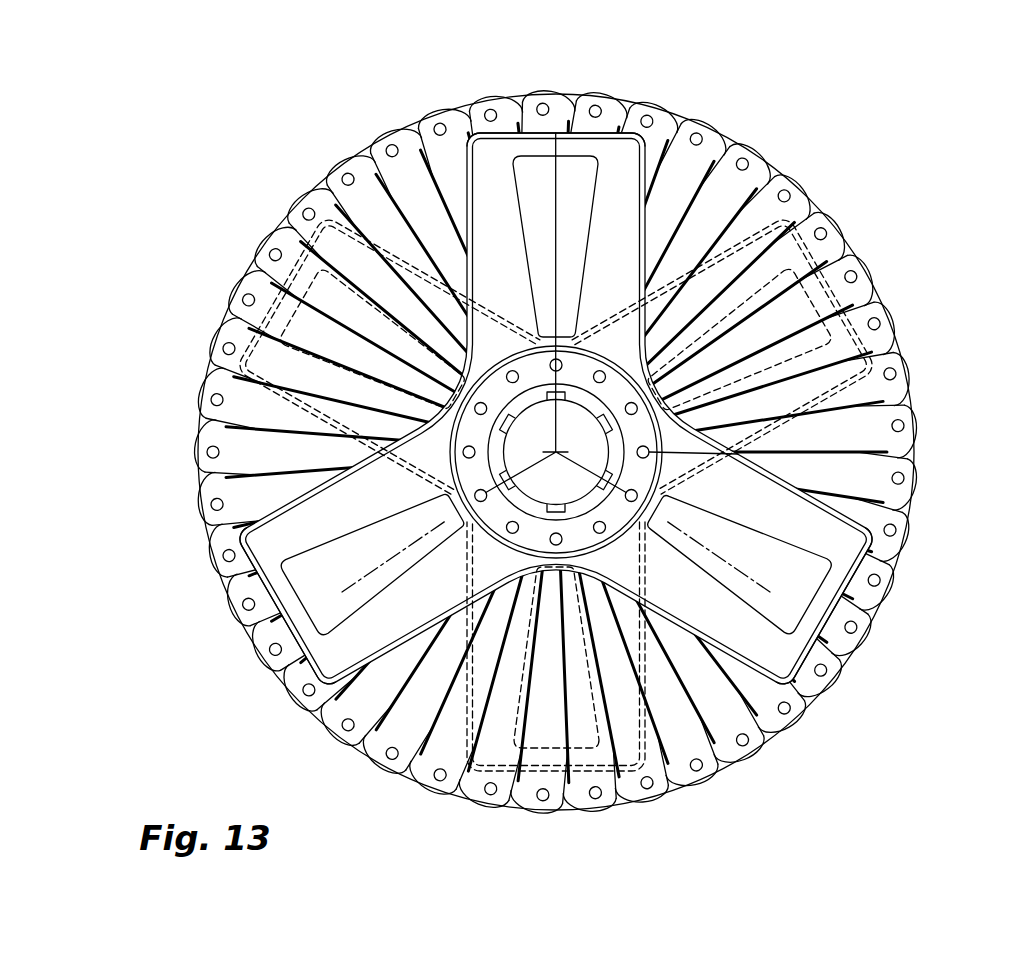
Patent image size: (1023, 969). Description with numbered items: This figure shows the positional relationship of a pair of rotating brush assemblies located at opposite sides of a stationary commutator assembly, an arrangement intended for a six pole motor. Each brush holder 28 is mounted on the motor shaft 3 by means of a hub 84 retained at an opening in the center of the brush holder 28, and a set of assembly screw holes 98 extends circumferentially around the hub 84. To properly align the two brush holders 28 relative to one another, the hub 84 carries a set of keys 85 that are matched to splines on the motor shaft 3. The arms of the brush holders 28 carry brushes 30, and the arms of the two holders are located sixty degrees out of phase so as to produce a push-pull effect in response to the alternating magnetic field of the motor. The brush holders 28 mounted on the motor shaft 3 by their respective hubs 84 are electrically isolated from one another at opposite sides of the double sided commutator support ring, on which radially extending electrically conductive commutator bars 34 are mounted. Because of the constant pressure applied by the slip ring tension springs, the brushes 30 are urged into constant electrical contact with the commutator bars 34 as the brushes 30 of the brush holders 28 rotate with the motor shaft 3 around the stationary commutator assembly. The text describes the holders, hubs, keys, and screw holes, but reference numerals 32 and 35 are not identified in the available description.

The motor shaft 3 is at (587, 431).
The brush holder 28 is at (625, 178).
The brush 30 is at (571, 166).
The blade 32 is at (600, 104).
The commutator bar 34 is at (770, 737).
The blade fastener hole 35 is at (437, 122).
The hub 84 is at (511, 371).
The key 85 is at (562, 385).
The assembly screw hole 98 is at (386, 203).